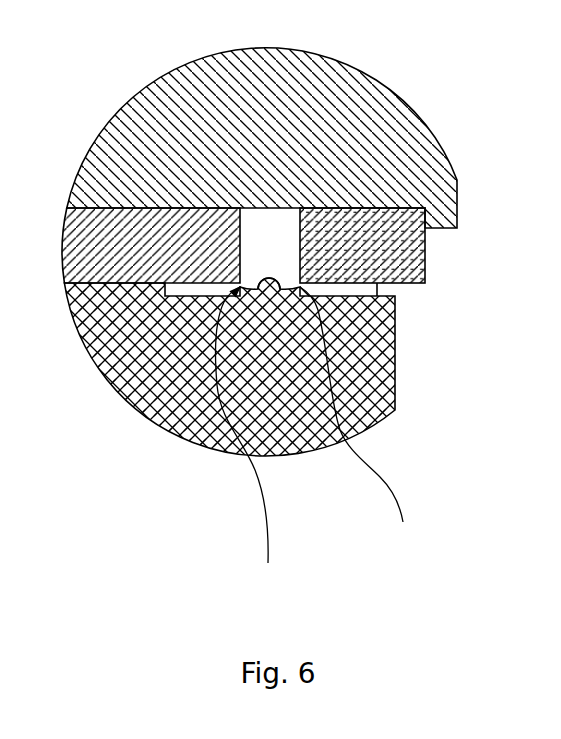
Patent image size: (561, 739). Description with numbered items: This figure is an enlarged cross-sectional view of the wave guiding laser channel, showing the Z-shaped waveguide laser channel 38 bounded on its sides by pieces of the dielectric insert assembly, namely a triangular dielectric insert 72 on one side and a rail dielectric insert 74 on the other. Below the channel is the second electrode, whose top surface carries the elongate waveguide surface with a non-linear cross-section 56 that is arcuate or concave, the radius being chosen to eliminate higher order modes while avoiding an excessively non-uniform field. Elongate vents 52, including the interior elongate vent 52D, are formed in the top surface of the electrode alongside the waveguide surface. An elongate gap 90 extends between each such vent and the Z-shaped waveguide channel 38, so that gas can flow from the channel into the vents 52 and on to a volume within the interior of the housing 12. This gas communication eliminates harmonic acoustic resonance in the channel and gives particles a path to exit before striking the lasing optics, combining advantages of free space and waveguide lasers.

The housing 12 is at (0, 580).
The Z-shaped waveguide laser channel 38 is at (276, 262).
The elongate vents 52 is at (366, 290).
The interior elongate vent 52D is at (193, 293).
The non-linear cross-section 56 is at (272, 290).
The triangular dielectric insert 72 is at (90, 240).
The rail dielectric insert 74 is at (410, 250).
The elongate gap 90 is at (315, 440).